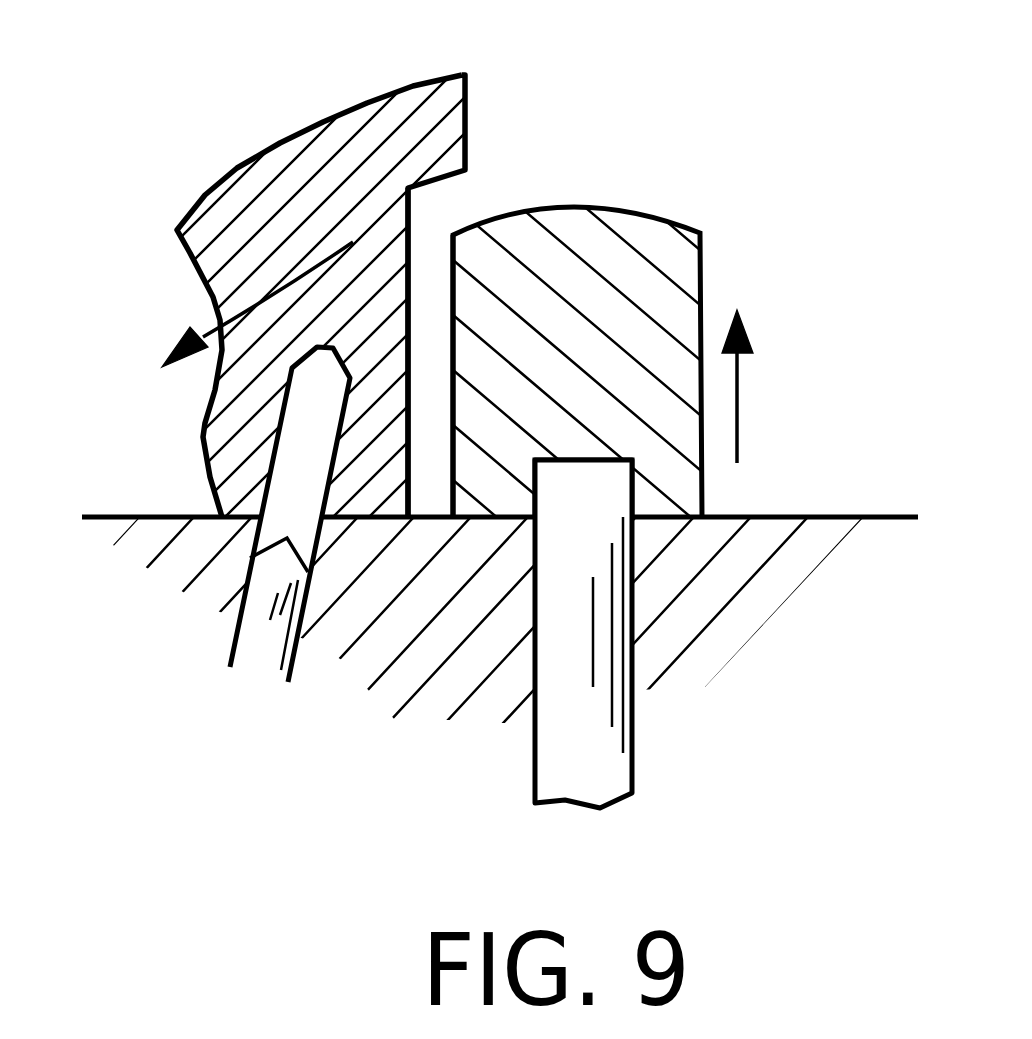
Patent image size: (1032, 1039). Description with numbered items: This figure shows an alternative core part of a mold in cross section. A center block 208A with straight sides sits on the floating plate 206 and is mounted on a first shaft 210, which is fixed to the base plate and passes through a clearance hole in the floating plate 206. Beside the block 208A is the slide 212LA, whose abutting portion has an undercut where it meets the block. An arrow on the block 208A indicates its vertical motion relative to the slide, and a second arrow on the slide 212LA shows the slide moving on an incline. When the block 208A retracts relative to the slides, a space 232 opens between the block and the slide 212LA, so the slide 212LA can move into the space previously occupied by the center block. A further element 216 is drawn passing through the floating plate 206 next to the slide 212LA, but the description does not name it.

The slide 212LA is at (323, 122).
The space 232 is at (445, 217).
The block 208A is at (700, 168).
The floating plate 206 is at (847, 515).
The blade 216 is at (280, 420).
The first shaft 210 is at (632, 735).